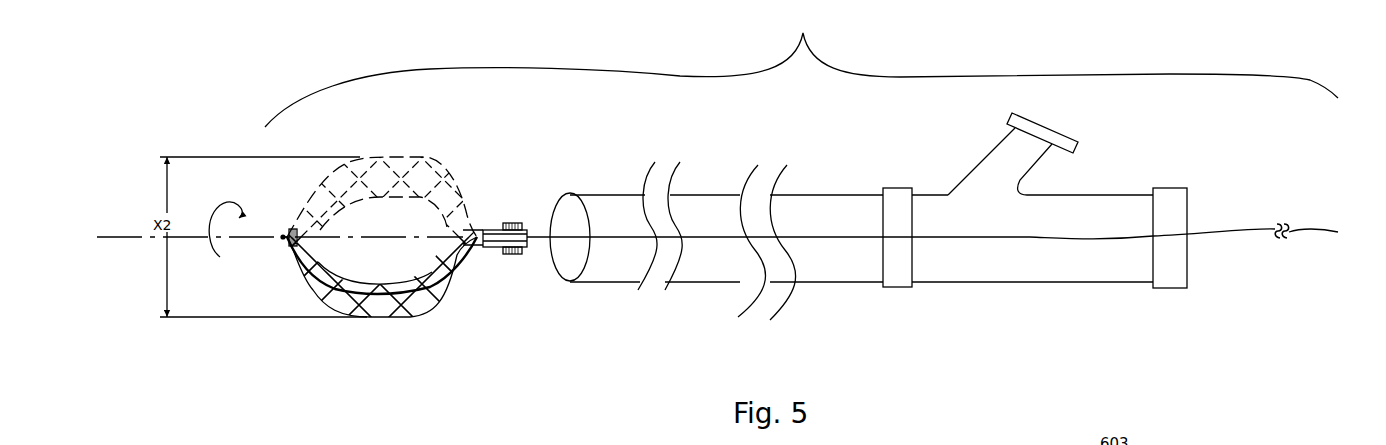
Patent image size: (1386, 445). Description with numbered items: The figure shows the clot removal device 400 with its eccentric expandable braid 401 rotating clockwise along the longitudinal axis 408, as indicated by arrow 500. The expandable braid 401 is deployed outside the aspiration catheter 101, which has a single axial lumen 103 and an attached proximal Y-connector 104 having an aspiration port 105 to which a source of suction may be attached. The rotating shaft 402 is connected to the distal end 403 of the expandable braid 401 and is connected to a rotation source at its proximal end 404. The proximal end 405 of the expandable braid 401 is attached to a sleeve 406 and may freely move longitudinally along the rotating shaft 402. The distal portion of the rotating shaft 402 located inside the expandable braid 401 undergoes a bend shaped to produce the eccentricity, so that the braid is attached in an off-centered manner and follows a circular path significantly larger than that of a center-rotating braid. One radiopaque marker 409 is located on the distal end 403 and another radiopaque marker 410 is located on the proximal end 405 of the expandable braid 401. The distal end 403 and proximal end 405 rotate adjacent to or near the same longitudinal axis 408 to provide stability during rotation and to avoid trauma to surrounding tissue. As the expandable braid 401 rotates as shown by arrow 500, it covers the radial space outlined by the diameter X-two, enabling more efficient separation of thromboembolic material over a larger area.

The clot removal device 400 is at (801, 68).
The eccentric expandable braid 401 is at (388, 317).
The rotating shaft 402 is at (544, 241).
The distal end of the expandable braid 403 is at (282, 240).
The proximal end of the rotating shaft 404 is at (1294, 236).
The proximal end of the expandable braid 405 is at (477, 224).
The sleeve 406 is at (532, 251).
The longitudinal axis 408 is at (123, 235).
The radiopaque marker 409 is at (293, 223).
The radiopaque marker 410 is at (515, 256).
The arrow 500 is at (220, 259).
The aspiration catheter 101 is at (654, 194).
The axial lumen 103 is at (577, 212).
The proximal Y-connector 104 is at (1064, 283).
The aspiration port 105 is at (979, 159).